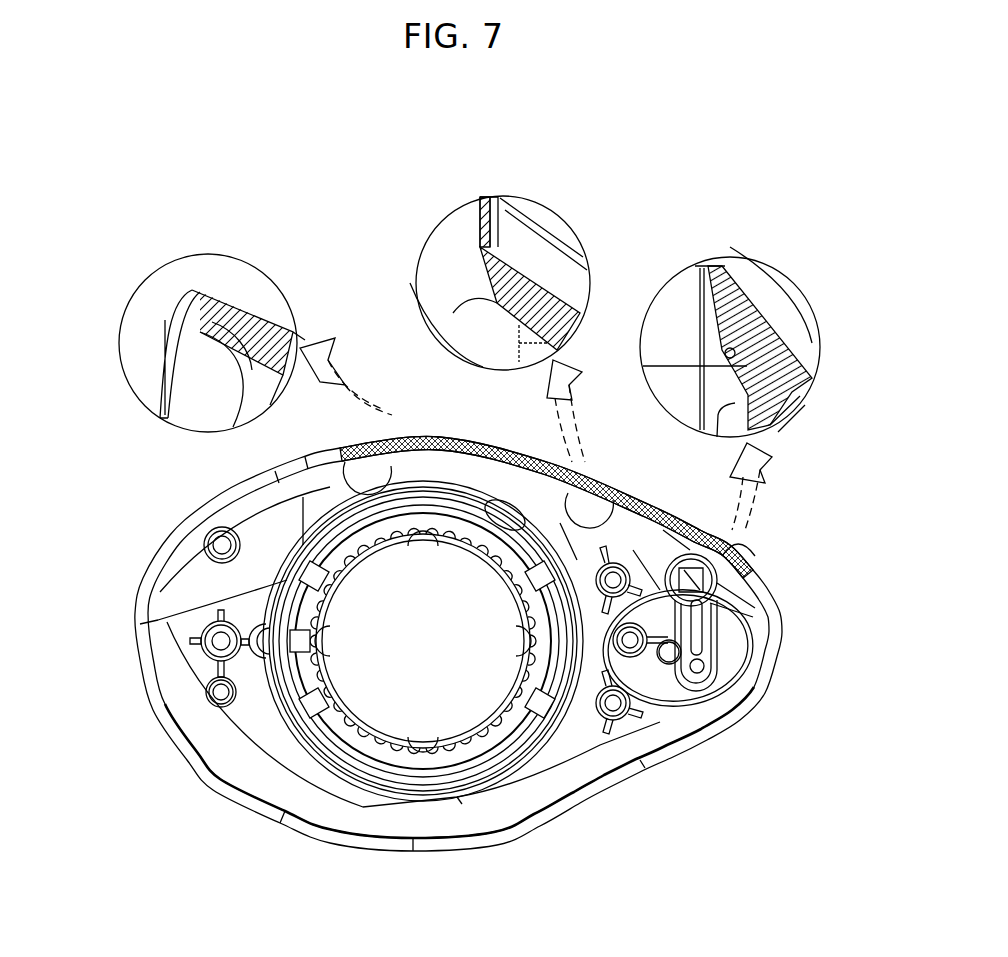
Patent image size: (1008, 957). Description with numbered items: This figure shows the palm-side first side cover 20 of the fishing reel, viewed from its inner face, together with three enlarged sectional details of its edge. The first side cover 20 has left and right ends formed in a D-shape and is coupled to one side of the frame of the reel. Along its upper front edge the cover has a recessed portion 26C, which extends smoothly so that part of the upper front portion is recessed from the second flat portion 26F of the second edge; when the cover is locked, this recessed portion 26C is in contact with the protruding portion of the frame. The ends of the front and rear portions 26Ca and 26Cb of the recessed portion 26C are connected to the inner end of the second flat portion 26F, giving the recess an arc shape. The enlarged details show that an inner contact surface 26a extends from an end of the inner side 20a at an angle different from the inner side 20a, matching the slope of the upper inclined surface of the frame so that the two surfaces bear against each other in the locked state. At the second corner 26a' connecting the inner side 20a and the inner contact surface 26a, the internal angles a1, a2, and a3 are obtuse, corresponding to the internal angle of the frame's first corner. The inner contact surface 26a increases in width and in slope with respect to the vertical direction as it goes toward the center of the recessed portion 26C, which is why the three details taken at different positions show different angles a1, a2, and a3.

The first side cover 20 is at (86, 185).
The inner side 20a is at (235, 410).
The recessed portion 26C is at (200, 290).
The front portion 26Ca is at (745, 548).
The rear portion 26Cb is at (345, 455).
The second flat portion 26F is at (200, 758).
The inner contact surface 26a is at (396, 314).
The second corner 26a' is at (415, 392).
The internal angle a1 is at (782, 313).
The internal angle a2 is at (200, 288).
The internal angle a3 is at (580, 258).